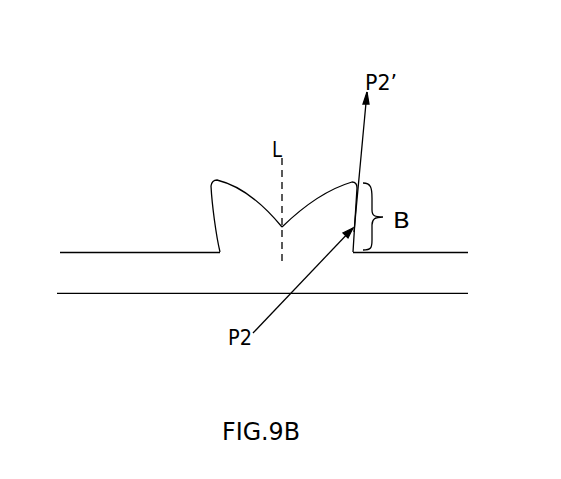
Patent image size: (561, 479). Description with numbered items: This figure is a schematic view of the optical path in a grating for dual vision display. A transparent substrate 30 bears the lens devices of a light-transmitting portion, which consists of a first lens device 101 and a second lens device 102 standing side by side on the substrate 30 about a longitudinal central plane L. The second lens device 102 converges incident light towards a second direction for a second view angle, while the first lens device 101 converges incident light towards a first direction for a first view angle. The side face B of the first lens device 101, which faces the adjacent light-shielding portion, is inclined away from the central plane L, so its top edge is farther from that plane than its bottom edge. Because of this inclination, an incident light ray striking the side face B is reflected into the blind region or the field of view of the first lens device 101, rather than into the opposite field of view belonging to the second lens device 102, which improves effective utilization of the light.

The transparent substrate 30 is at (133, 278).
The first lens device 101 is at (308, 205).
The second lens device 102 is at (245, 191).